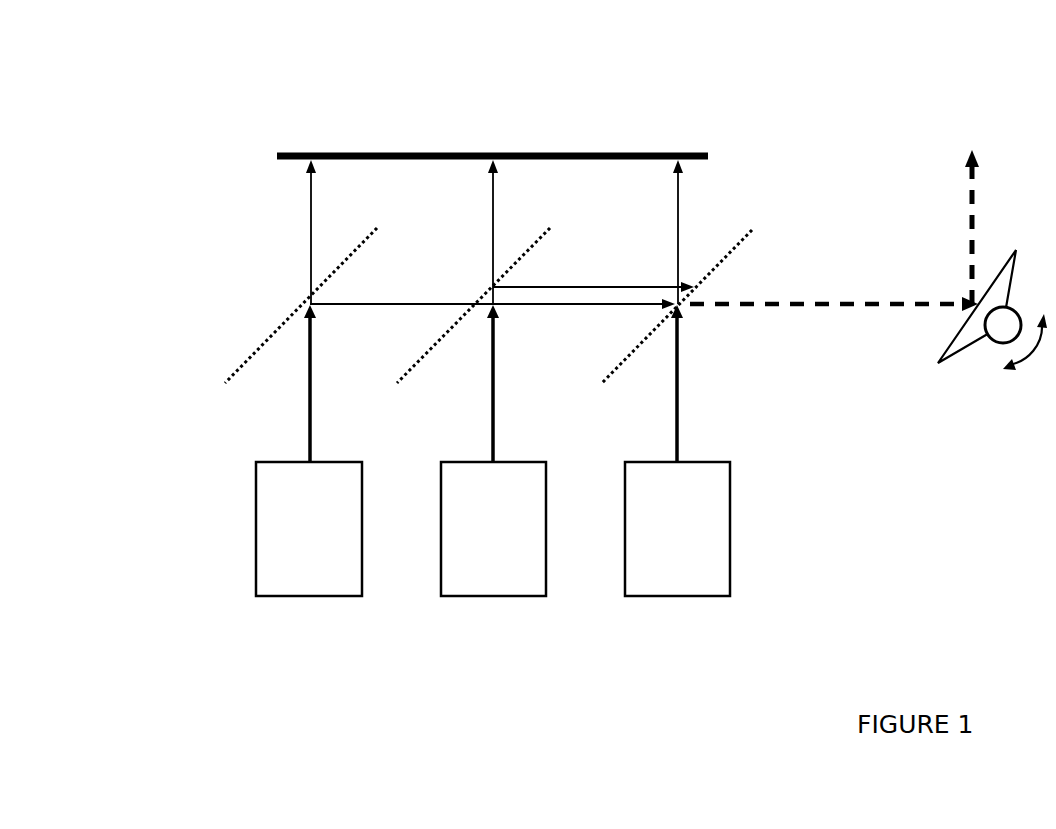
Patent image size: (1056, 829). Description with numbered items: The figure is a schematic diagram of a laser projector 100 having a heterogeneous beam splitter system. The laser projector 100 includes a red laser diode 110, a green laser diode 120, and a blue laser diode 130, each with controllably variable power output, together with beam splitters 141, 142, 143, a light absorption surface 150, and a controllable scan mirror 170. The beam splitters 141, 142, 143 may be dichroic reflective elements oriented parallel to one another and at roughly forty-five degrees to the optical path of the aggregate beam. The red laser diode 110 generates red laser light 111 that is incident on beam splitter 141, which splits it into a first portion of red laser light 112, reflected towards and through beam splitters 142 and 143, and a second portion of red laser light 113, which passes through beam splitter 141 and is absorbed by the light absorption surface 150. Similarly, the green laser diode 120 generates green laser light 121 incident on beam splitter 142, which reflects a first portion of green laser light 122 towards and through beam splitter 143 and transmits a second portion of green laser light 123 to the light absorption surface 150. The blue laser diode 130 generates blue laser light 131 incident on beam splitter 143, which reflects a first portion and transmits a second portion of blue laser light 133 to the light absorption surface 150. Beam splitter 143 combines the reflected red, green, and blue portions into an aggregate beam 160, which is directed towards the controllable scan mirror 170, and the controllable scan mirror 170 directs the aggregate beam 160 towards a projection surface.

The laser projector 100 is at (160, 138).
The red laser diode 110 is at (350, 598).
The red laser light 111 is at (308, 395).
The first portion of red laser light 112 is at (402, 307).
The second portion of red laser light 113 is at (310, 233).
The green laser diode 120 is at (534, 598).
The green laser light 121 is at (492, 395).
The first portion of green laser light 122 is at (602, 290).
The second portion of green laser light 123 is at (492, 233).
The blue laser diode 130 is at (718, 598).
The blue laser light 131 is at (677, 395).
The second portion of blue laser light 133 is at (677, 233).
The beam splitter 141 is at (363, 243).
The beam splitter 142 is at (540, 242).
The beam splitter 143 is at (740, 243).
The light absorption surface 150 is at (545, 152).
The aggregate beam 160 is at (775, 307).
The controllable scan mirror 170 is at (953, 353).